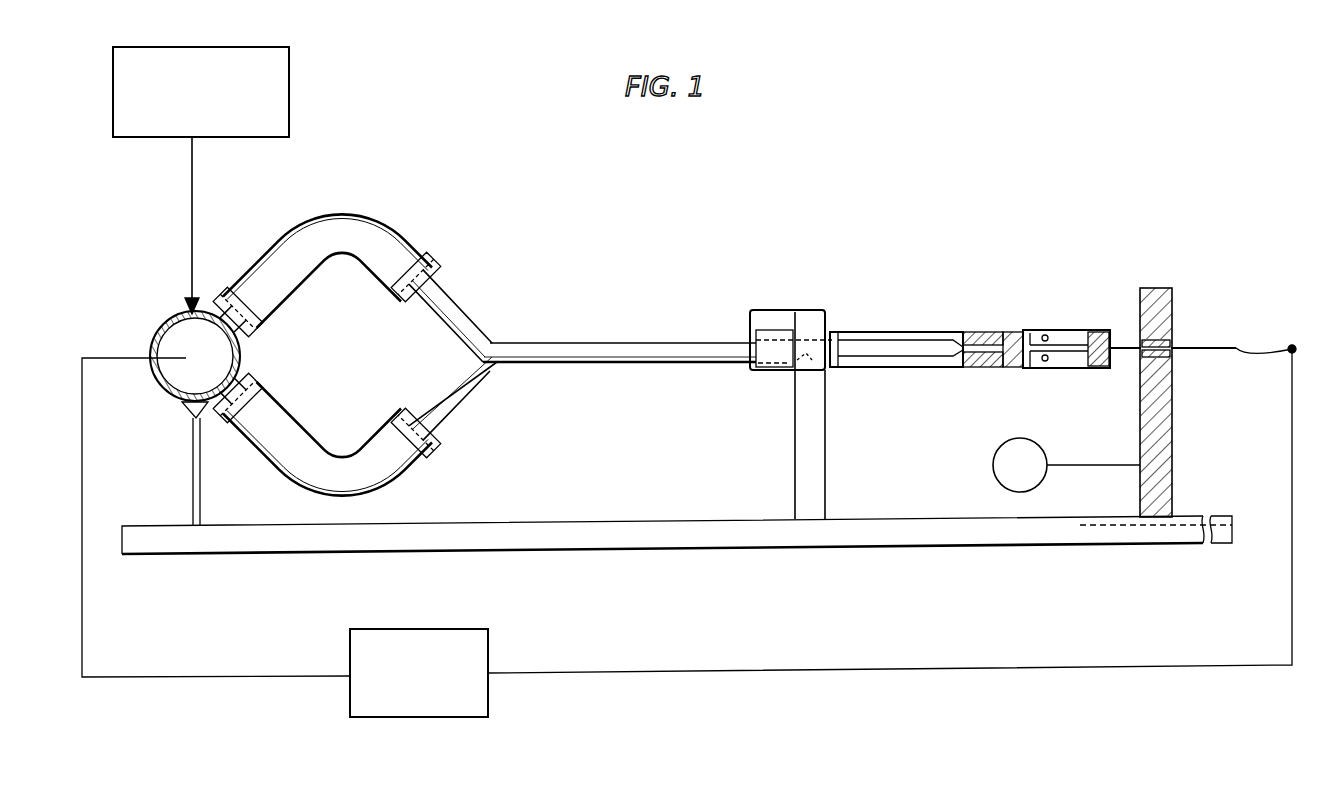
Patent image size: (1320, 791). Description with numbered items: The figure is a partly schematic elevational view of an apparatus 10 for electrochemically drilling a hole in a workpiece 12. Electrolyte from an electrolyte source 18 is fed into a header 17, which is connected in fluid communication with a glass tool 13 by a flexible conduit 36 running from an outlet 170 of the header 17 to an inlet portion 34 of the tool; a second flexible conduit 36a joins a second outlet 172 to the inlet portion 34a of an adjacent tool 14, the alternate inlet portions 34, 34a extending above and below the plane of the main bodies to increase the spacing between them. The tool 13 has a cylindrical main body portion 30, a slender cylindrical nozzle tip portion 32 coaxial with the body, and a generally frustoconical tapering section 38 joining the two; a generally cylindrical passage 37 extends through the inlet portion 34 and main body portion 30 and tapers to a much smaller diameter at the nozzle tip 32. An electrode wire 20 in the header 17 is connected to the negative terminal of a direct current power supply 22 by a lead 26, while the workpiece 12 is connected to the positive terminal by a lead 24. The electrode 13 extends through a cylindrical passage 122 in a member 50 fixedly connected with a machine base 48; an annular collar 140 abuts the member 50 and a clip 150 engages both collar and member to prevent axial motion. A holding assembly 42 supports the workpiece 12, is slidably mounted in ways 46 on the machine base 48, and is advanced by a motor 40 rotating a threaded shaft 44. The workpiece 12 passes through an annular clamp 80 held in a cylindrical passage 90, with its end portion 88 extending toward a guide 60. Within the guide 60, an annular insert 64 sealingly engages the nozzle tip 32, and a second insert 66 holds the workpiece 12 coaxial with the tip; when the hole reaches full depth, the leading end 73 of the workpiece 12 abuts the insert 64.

The apparatus 10 is at (626, 186).
The workpiece 12 is at (1234, 342).
The tool 13 is at (577, 338).
The tool 14 is at (470, 425).
The header 17 is at (172, 322).
The electrolyte source 18 is at (290, 82).
The electrode wire 20 is at (184, 398).
The power supply 22 is at (440, 718).
The lead 24 is at (806, 672).
The lead 26 is at (250, 678).
The main body portion 30 is at (652, 352).
The nozzle tip portion 32 is at (1028, 332).
The inlet portion 34 is at (450, 308).
The inlet portion 34a is at (480, 376).
The flexible conduit 36 is at (372, 222).
The flexible conduit 36a is at (382, 478).
The passage 37 is at (890, 342).
The tapering section 38 is at (962, 332).
The motor 40 is at (993, 476).
The holding assembly 42 is at (1226, 430).
The threaded shaft 44 is at (1106, 468).
The ways 46 is at (1114, 530).
The machine base 48 is at (792, 538).
The member 50 is at (810, 478).
The guide 60 is at (1090, 322).
The insert 64 is at (988, 370).
The second insert 66 is at (1108, 370).
The leading end 73 is at (1028, 368).
The annular clamp 80 is at (1206, 322).
The end portion 88 is at (1075, 362).
The cylindrical passage 90 is at (1160, 358).
The cylindrical passage 122 is at (797, 366).
The annular collar 140 is at (756, 370).
The clip 150 is at (774, 310).
The outlet 170 is at (243, 335).
The outlet 172 is at (245, 378).